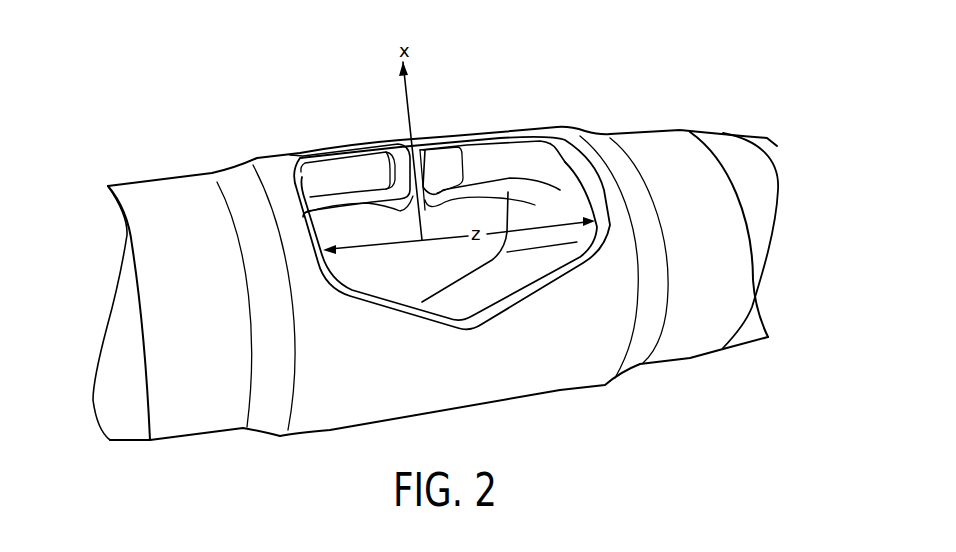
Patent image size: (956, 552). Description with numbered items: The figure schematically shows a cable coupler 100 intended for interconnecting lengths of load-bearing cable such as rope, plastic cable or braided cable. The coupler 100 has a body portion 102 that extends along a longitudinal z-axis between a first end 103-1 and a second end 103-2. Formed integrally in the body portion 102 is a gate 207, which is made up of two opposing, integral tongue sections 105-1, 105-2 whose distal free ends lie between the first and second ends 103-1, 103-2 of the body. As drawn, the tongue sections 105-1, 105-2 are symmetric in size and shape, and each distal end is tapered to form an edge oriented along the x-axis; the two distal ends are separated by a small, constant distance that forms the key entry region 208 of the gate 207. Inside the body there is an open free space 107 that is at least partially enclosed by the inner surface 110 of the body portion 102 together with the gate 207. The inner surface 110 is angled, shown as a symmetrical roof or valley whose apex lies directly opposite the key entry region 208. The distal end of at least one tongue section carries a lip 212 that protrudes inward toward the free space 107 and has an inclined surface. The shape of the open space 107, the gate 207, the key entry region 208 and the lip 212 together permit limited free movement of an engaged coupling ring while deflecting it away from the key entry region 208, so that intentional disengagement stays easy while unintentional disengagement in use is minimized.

The cable coupler 100 is at (260, 78).
The body portion 102 is at (207, 192).
The first end 103-1 is at (760, 192).
The second end 103-2 is at (128, 318).
The first tongue section 105-1 is at (352, 170).
The second tongue section 105-2 is at (500, 155).
The open free space 107 is at (400, 265).
The inner surface 110 is at (495, 290).
The gate 207 is at (529, 135).
The key entry region 208 is at (420, 148).
The lip 212 is at (426, 205).